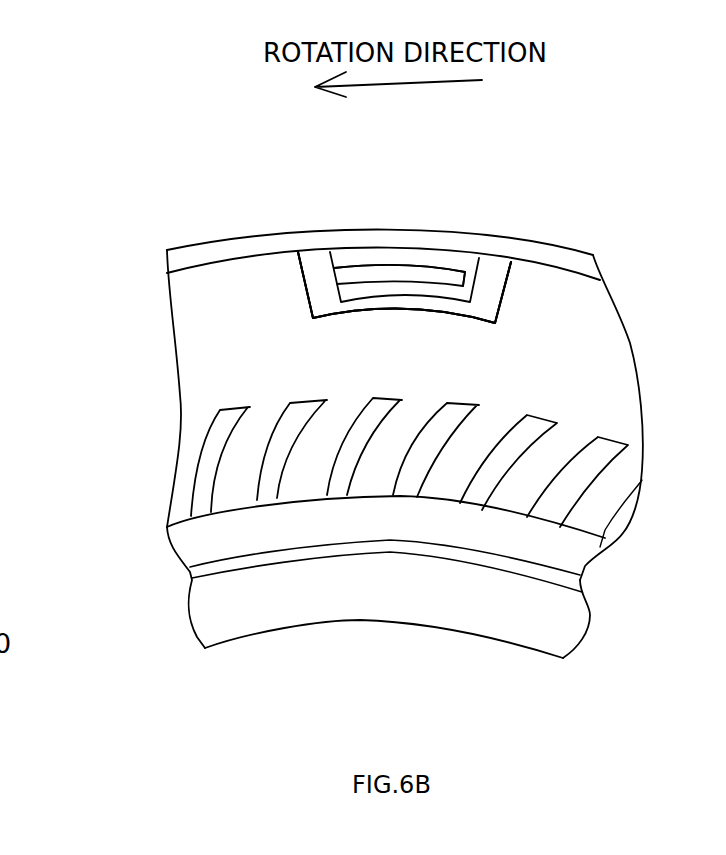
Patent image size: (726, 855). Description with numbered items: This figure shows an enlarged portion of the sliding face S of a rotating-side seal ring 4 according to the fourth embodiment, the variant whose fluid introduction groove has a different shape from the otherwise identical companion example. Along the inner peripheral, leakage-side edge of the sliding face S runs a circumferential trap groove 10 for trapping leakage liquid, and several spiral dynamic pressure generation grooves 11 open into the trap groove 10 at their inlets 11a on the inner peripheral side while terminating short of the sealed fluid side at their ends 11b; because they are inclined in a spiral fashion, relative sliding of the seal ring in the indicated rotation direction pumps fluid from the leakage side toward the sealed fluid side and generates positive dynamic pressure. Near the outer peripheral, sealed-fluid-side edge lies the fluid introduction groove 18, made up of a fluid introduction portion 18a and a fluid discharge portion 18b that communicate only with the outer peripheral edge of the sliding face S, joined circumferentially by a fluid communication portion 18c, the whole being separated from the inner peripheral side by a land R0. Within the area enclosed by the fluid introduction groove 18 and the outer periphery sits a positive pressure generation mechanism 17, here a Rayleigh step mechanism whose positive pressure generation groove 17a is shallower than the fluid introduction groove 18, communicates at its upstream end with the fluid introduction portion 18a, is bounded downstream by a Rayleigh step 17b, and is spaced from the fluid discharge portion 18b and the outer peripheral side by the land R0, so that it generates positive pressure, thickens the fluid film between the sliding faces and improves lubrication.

The rotating-side seal ring 4 is at (457, 232).
The trap groove 10 is at (532, 550).
The dynamic pressure generation groove 11 is at (352, 438).
The inlet 11a is at (403, 498).
The end on the sealed fluid side 11b is at (395, 397).
The positive pressure generation mechanism 17 is at (360, 254).
The positive pressure generation groove 17a is at (374, 256).
The Rayleigh step 17b is at (453, 289).
The fluid introduction groove 18 is at (417, 447).
The fluid introduction portion 18a is at (295, 291).
The fluid discharge portion 18b is at (500, 284).
The fluid communication portion 18c is at (395, 305).
The sliding face S is at (227, 344).
The land R0 is at (448, 292).